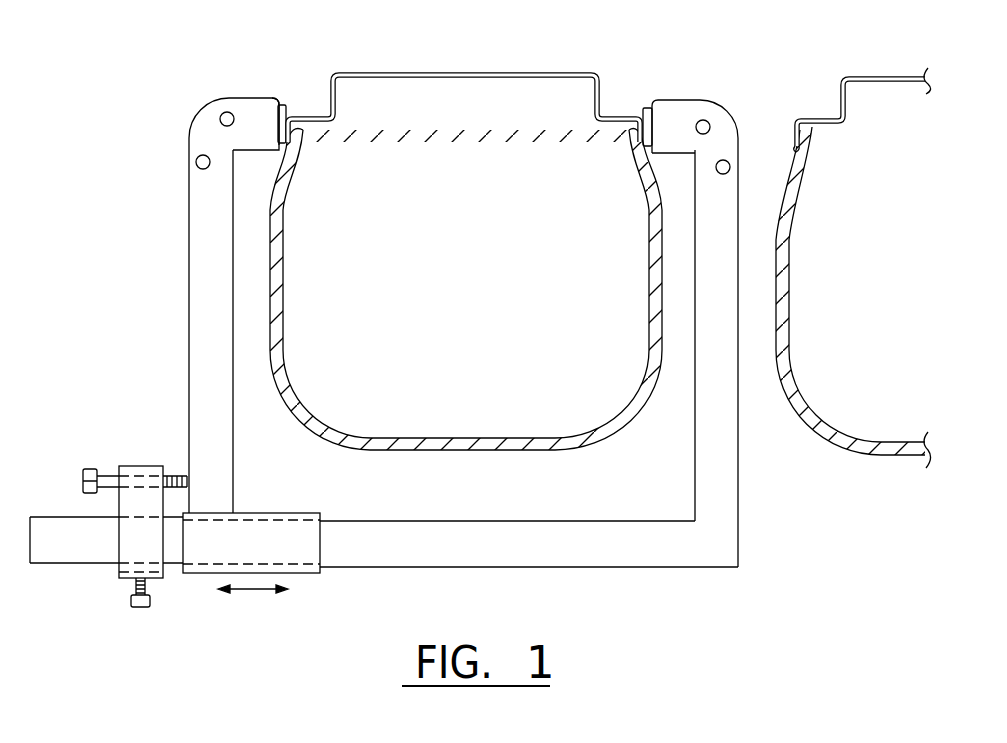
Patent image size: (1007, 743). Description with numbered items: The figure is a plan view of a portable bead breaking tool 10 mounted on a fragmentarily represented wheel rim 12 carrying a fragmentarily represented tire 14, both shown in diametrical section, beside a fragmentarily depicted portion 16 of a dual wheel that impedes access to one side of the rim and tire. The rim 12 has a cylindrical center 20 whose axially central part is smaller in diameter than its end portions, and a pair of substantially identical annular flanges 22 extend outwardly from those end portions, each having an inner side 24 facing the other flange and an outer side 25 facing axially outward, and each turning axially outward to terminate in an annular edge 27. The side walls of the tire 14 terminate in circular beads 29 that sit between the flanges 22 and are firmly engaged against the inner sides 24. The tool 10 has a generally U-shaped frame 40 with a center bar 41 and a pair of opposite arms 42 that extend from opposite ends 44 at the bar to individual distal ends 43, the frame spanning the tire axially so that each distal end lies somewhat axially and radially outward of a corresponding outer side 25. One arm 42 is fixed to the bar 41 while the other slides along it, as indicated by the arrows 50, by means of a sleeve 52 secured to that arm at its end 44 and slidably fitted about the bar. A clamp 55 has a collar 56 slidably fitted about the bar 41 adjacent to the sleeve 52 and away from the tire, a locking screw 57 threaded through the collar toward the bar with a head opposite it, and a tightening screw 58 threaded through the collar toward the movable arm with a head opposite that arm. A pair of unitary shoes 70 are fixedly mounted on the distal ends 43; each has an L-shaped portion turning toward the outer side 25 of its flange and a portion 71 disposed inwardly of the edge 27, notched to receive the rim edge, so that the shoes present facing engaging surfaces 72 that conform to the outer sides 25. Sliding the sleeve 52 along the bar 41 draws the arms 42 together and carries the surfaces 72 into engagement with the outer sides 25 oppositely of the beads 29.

The portable bead breaking tool 10 is at (166, 329).
The wheel rim 12 is at (464, 96).
The tire 14 is at (451, 433).
The portion 16 is at (820, 138).
The center 20 is at (490, 72).
The annular flanges 22 is at (338, 76).
The inner side 24 is at (336, 101).
The outer side 25 is at (330, 92).
The annular edge 27 is at (283, 190).
The circular beads 29 is at (300, 126).
The frame 40 is at (488, 362).
The bar 41 is at (511, 557).
The arms 42 is at (226, 458).
The distal ends 43 is at (205, 272).
The opposite ends 44 is at (223, 503).
The arrows 50 is at (258, 592).
The sleeve 52 is at (288, 562).
The clamp 55 is at (117, 582).
The collar 56 is at (124, 540).
The locking screw 57 is at (147, 587).
The tightening screw 58 is at (107, 480).
The shoes 70 is at (194, 106).
The portion 71 is at (280, 118).
The engaging surfaces 72 is at (283, 116).